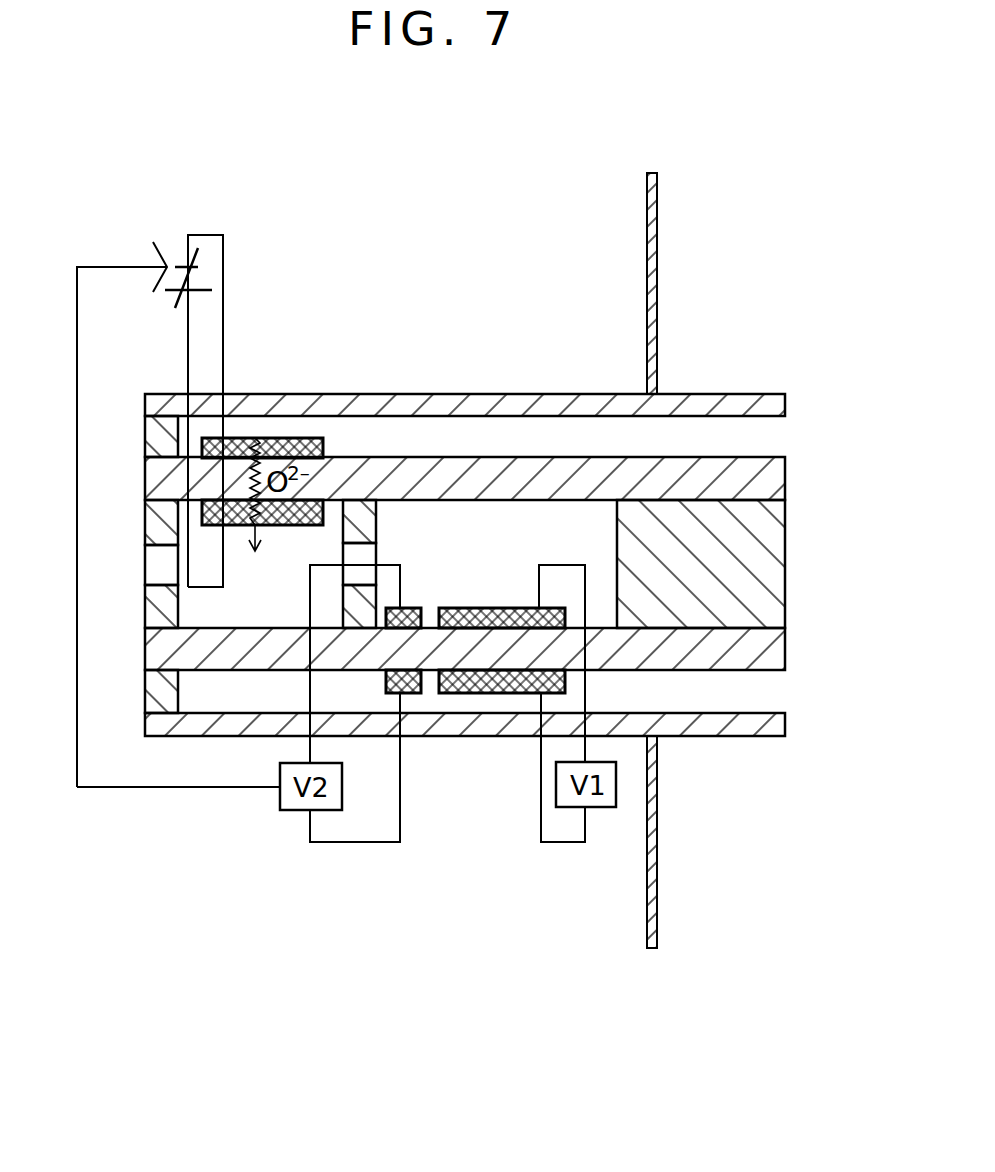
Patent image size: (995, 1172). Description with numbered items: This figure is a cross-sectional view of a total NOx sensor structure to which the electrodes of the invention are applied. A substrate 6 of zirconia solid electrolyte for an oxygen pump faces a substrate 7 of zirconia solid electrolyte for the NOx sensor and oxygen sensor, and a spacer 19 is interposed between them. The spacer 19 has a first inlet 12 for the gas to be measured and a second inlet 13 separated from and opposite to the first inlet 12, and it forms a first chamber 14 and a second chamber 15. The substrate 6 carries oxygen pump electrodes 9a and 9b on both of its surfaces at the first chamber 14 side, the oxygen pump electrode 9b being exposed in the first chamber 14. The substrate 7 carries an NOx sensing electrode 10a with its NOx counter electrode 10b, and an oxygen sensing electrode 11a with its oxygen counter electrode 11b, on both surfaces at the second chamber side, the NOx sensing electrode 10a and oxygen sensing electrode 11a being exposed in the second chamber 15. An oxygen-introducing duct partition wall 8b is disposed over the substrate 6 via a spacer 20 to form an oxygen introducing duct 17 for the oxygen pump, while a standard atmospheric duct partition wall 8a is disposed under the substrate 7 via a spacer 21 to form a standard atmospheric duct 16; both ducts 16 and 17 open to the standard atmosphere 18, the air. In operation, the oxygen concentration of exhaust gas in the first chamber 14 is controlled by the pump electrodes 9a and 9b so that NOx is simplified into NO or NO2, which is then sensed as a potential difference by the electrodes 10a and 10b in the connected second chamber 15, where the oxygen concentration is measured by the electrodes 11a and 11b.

The substrate 6 is at (468, 465).
The substrate 7 is at (255, 663).
The standard atmospheric duct partition wall 8a is at (198, 725).
The oxygen-introducing duct partition wall 8b is at (565, 400).
The oxygen pump electrode 9a is at (290, 438).
The oxygen pump electrode 9b is at (288, 527).
The NOx sensing electrode 10a is at (490, 608).
The NOx counter electrode 10b is at (490, 693).
The oxygen sensing electrode 11a is at (415, 608).
The oxygen counter electrode 11b is at (413, 693).
The first inlet 12 is at (160, 570).
The second inlet 13 is at (358, 548).
The first chamber 14 is at (268, 618).
The second chamber 15 is at (590, 542).
The standard atmospheric duct 16 is at (665, 702).
The oxygen introducing duct 17 is at (652, 452).
The standard atmosphere 18 is at (850, 580).
The spacer 19 is at (152, 522).
The spacer 20 is at (152, 436).
The spacer 21 is at (152, 697).